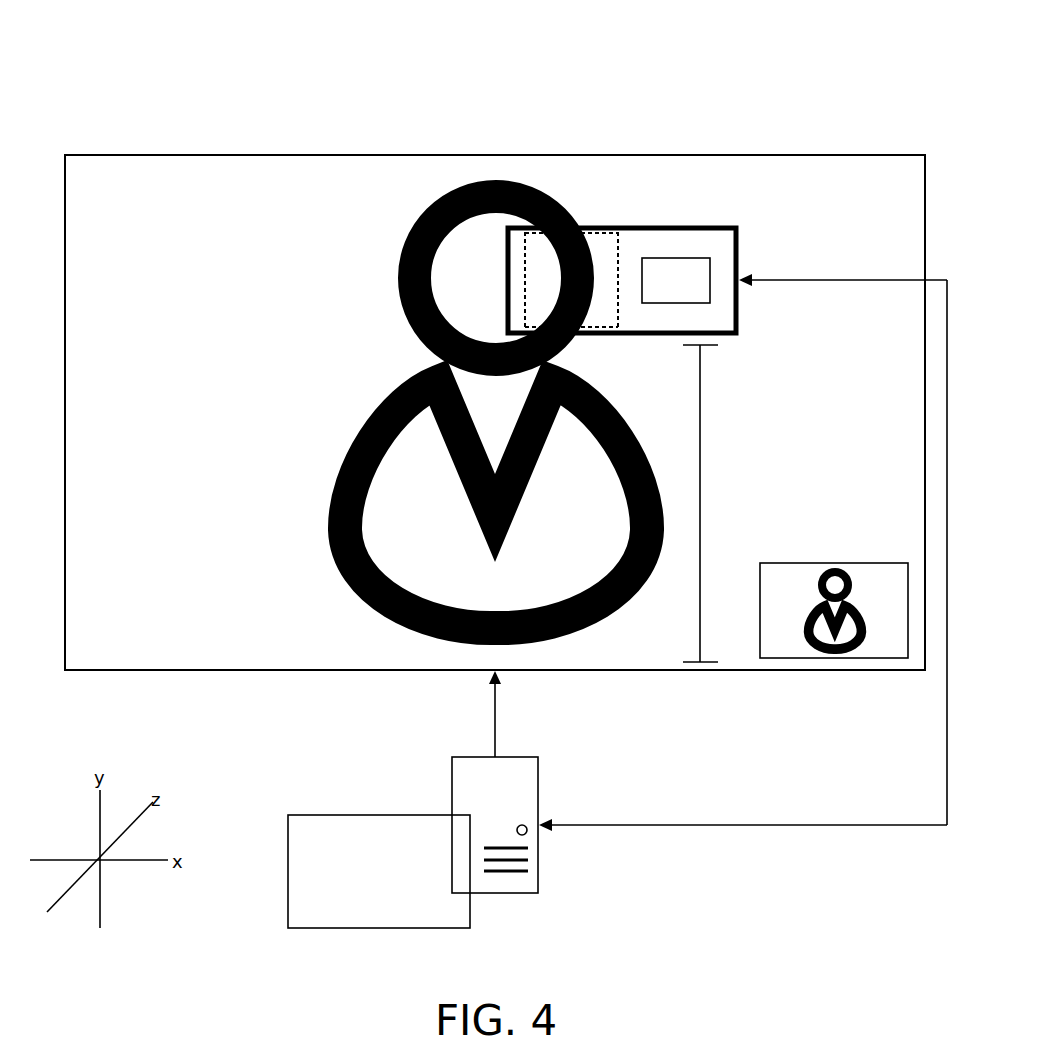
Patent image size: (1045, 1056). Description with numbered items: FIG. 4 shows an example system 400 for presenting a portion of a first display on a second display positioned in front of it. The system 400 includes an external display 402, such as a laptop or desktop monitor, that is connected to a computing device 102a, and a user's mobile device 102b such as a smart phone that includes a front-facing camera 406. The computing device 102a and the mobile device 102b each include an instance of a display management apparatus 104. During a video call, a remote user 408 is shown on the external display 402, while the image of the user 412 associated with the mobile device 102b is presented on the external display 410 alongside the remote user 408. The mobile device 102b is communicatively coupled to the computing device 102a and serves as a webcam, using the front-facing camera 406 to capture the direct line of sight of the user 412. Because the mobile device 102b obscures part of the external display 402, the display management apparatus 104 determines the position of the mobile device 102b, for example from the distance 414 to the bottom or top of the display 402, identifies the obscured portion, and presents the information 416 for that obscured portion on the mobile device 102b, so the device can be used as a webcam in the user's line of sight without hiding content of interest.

The system 400 is at (162, 62).
The external display 402 is at (84, 672).
The front-facing camera 406 is at (505, 283).
The remote user 408 is at (362, 430).
The external display (user image region) 410 is at (760, 577).
The user 412 is at (820, 598).
The distance 414 is at (716, 447).
The information 416 is at (610, 236).
The computing device 102a is at (452, 768).
The mobile device 102b is at (740, 243).
The display management apparatus 104 is at (499, 593).